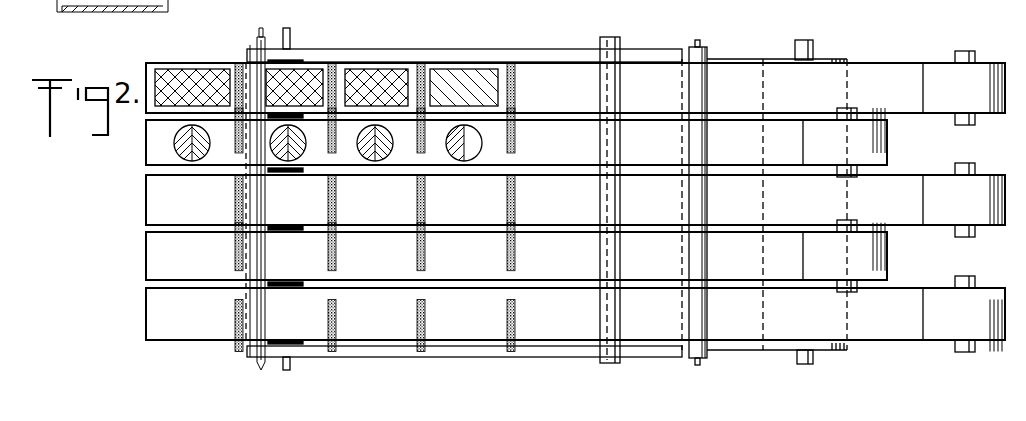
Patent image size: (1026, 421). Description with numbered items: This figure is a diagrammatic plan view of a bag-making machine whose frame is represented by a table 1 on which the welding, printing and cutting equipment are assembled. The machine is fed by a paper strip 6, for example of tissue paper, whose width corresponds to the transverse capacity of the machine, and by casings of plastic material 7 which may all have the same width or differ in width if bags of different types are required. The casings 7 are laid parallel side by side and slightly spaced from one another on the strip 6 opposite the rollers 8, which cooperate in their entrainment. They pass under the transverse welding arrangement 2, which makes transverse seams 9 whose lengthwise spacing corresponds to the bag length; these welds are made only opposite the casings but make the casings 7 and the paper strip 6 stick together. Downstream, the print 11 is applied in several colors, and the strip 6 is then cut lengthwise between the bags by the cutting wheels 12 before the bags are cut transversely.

The table 1 is at (326, 49).
The transverse welding arrangement 2 is at (614, 37).
The paper strip 6 is at (746, 61).
The casings of plastic material 7 is at (879, 70).
The rollers 8 is at (707, 56).
The transverse seams 9 is at (512, 64).
The print 11 is at (438, 76).
The cutting wheels 12 is at (299, 224).